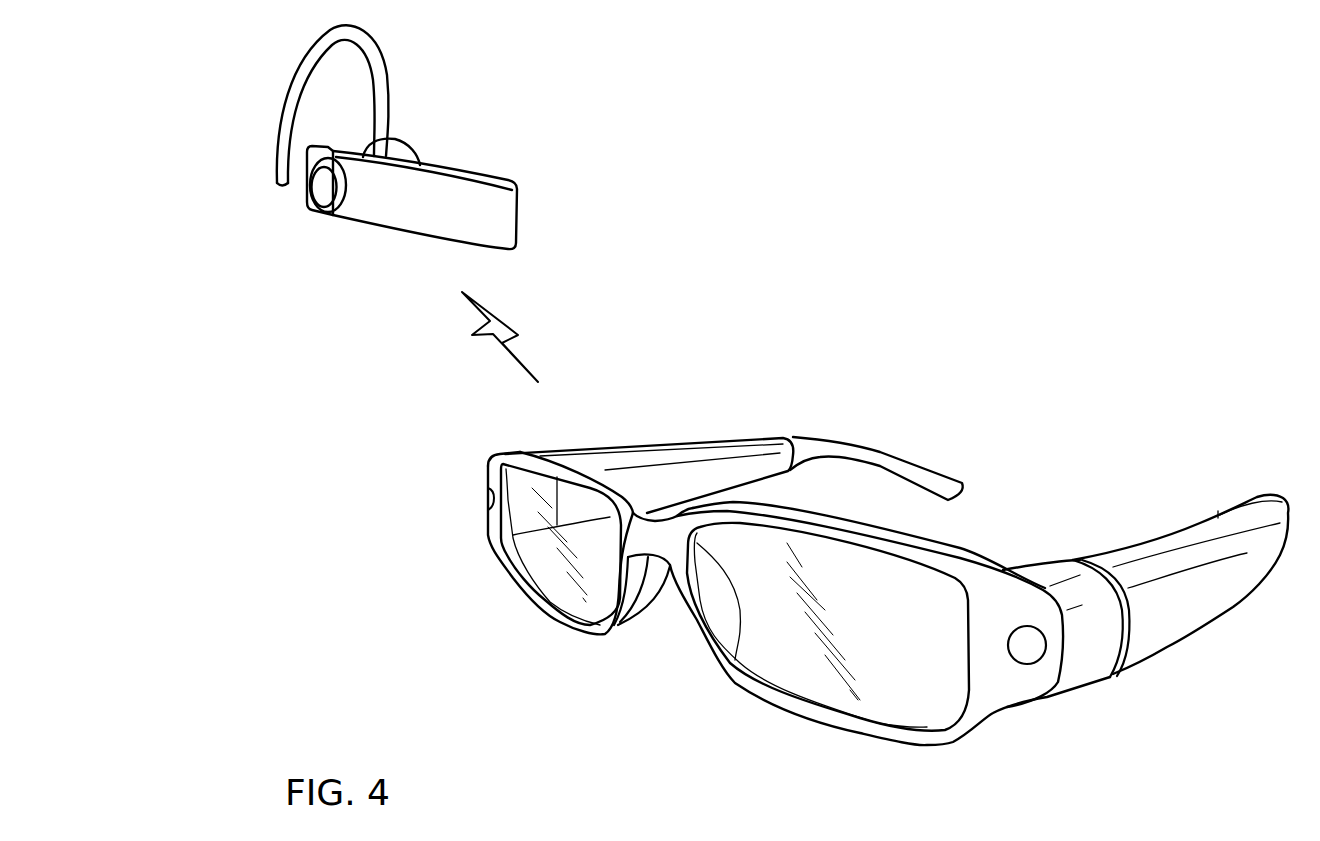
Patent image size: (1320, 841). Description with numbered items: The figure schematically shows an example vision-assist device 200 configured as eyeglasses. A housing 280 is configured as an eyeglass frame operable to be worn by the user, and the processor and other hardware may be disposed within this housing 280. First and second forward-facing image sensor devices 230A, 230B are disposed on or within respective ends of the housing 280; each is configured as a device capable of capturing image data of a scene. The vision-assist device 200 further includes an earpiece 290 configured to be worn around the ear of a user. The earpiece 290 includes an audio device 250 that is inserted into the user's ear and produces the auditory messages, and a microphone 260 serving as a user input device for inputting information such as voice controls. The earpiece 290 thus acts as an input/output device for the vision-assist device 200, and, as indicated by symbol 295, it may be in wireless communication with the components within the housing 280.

The vision-assist device 200 is at (840, 460).
The first forward-facing image sensor device 230A is at (488, 497).
The second forward-facing image sensor device 230B is at (1037, 658).
The audio device 250 is at (403, 148).
The microphone 260 is at (417, 231).
The housing 280 is at (747, 432).
The earpiece 290 is at (327, 153).
The symbol 295 is at (520, 335).